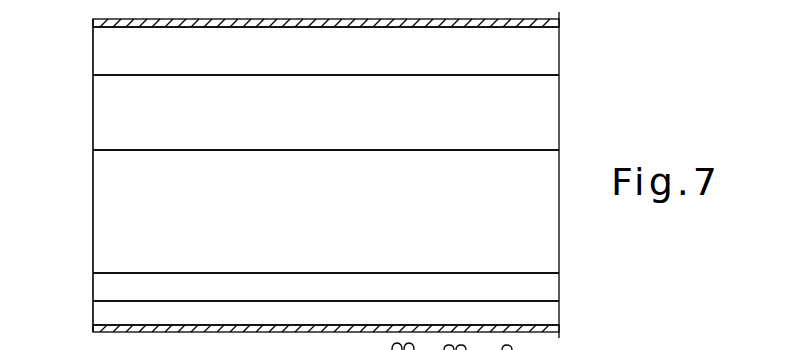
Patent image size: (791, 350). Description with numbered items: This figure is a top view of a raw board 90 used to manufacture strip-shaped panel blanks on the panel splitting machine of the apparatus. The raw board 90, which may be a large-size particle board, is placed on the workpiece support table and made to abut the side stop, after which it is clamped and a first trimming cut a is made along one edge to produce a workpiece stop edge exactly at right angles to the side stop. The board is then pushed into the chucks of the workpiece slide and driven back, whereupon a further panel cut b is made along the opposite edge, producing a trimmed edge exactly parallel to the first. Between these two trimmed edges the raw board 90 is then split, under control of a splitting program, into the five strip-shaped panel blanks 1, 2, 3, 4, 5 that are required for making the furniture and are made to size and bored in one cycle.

The panel blank 1 is at (326, 52).
The panel blank 2 is at (326, 112).
The panel blank 3 is at (326, 211).
The panel blank 4 is at (326, 287).
The panel blank 5 is at (326, 312).
The first trimming cut a is at (559, 23).
The further panel cut b is at (559, 329).
The raw board 90 is at (93, 206).